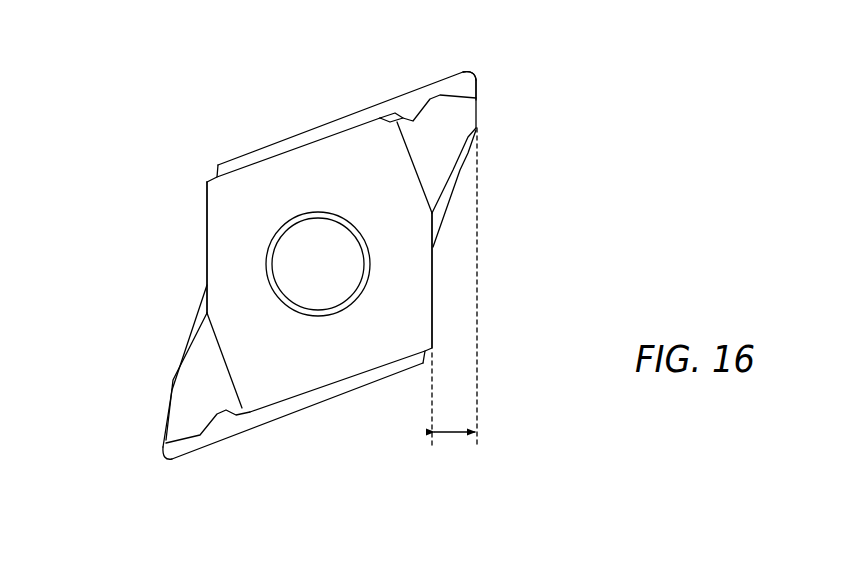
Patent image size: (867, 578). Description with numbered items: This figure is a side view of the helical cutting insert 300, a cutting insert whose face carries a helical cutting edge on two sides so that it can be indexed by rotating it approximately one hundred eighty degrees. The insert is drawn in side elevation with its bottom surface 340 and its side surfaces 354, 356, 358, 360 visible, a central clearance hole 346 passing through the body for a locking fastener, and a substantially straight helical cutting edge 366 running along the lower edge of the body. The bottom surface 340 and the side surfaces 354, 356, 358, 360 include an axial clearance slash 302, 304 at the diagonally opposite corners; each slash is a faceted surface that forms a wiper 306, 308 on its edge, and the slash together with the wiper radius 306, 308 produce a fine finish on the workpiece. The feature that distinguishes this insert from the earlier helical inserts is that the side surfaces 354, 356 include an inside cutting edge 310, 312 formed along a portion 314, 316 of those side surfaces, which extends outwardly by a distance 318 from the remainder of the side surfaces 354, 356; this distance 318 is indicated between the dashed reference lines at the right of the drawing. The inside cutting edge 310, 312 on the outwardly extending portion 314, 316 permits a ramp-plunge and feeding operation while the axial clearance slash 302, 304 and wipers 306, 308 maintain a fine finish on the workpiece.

The helical cutting insert 300 is at (136, 103).
The axial clearance slash 302 is at (457, 110).
The axial clearance slash 304 is at (188, 396).
The wiper 306 is at (476, 74).
The wiper 308 is at (165, 456).
The inside cutting edge 310 is at (478, 120).
The inside cutting edge 312 is at (163, 433).
The portion of side surface 314 is at (483, 143).
The portion of side surface 316 is at (172, 352).
The distance 318 is at (452, 430).
The bottom surface 340 is at (362, 172).
The mounting hole 346 is at (275, 263).
The side surface 354 is at (173, 250).
The side surface 356 is at (458, 255).
The side surface 358 is at (325, 101).
The side surface 360 is at (274, 450).
The helical cutting edge 366 is at (323, 408).